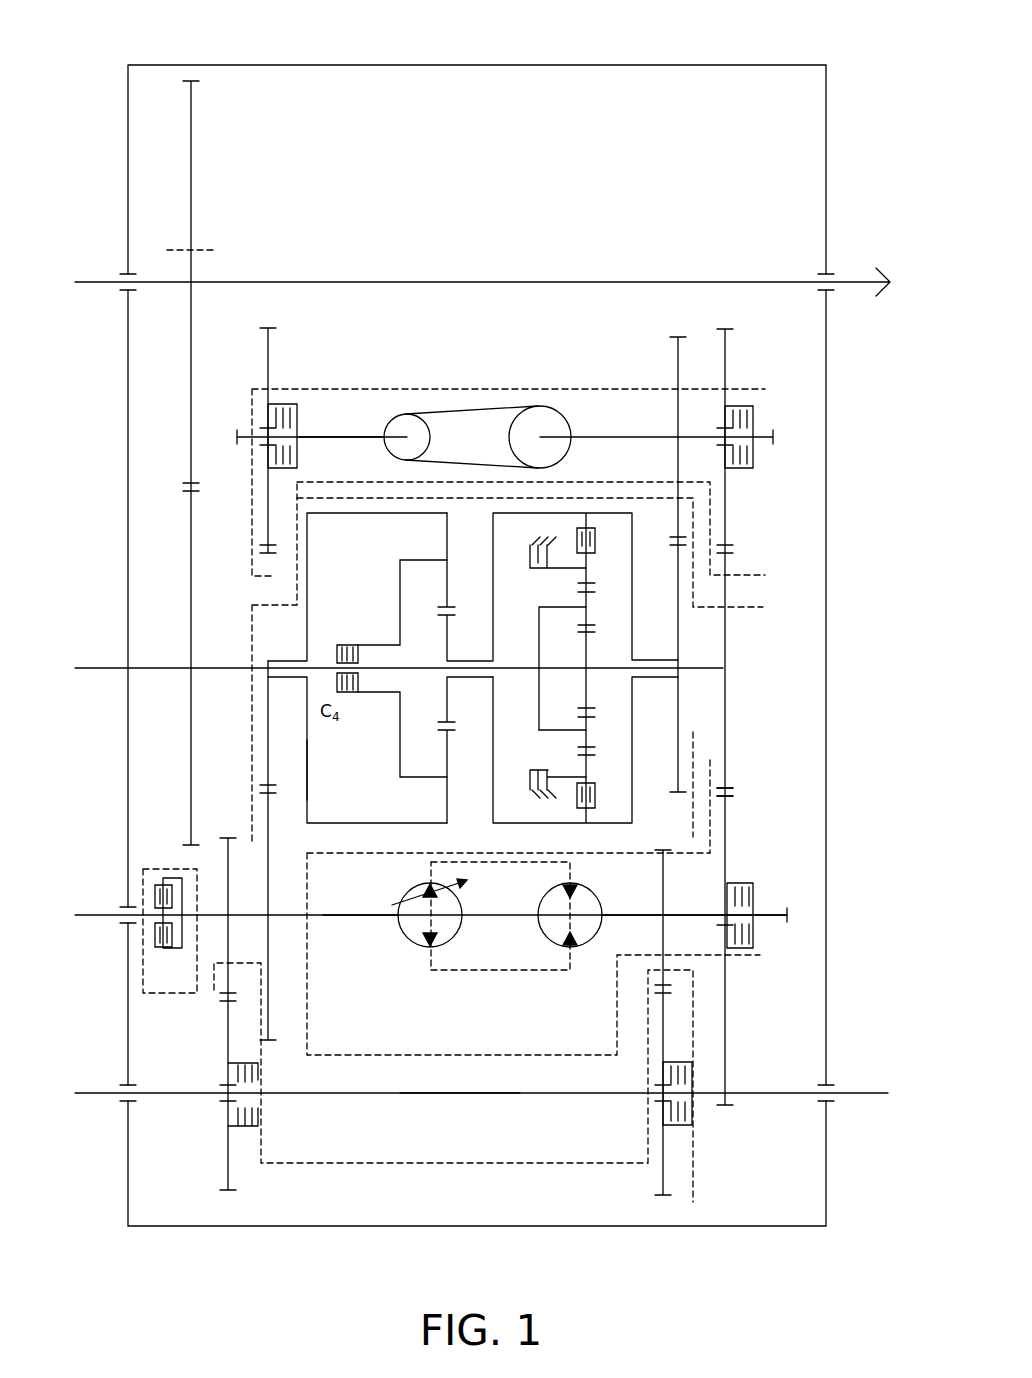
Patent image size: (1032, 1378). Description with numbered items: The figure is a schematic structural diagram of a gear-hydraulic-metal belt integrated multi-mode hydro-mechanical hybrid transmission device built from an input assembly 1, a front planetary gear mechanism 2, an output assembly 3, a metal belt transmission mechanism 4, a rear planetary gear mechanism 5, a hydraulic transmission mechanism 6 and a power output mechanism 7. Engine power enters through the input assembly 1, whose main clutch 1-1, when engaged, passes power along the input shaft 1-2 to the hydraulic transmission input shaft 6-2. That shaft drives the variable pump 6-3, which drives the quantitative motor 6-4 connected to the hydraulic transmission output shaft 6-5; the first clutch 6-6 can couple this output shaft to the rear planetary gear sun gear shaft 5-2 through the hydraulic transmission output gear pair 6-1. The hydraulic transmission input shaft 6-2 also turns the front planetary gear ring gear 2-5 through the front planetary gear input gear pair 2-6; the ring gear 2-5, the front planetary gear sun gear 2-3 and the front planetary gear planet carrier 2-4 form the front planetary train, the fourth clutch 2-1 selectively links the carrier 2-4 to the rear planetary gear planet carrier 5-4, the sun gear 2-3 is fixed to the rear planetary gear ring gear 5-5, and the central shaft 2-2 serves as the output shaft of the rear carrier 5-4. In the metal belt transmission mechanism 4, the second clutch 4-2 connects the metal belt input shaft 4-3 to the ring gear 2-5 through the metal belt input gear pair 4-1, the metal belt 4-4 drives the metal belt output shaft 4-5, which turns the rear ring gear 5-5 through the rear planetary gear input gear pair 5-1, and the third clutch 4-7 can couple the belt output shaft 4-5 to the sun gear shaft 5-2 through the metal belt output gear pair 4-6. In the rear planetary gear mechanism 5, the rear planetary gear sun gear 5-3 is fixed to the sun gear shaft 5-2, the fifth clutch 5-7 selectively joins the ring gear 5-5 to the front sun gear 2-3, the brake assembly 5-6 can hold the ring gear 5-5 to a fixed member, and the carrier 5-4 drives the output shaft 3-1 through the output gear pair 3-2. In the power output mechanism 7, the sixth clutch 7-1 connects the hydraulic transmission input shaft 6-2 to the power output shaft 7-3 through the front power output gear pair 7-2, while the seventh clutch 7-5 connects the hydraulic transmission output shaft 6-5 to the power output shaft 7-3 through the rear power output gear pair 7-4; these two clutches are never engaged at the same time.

The input assembly 1 is at (155, 897).
The main clutch C0 1-1 is at (157, 907).
The input shaft 1-2 is at (159, 915).
The front planetary gear mechanism 2 is at (250, 605).
The fourth clutch C4 2-1 is at (337, 658).
The central shaft 2-2 is at (306, 668).
The front planetary gear sun gear 2-3 is at (444, 718).
The front planetary gear planet carrier 2-4 is at (401, 762).
The front planetary gear ring gear 2-5 is at (307, 770).
The front planetary gear input gear pair 2-6 is at (260, 785).
The output assembly 3 is at (167, 250).
The output shaft 3-1 is at (198, 278).
The output gear pair 3-2 is at (199, 485).
The metal belt transmission mechanism 4 is at (252, 389).
The metal belt input gear pair 4-1 is at (262, 545).
The second clutch C2 4-2 is at (296, 468).
The metal belt input shaft 4-3 is at (338, 437).
The metal belt 4-4 is at (463, 410).
The metal belt output shaft 4-5 is at (585, 435).
The metal belt output gear pair 4-6 is at (725, 490).
The third clutch C3 4-7 is at (753, 405).
The rear planetary gear mechanism 5 is at (695, 513).
The rear planetary gear input gear pair 5-1 is at (695, 541).
The rear planetary gear sun gear shaft 5-2 is at (593, 667).
The rear planetary gear sun gear 5-3 is at (587, 682).
The rear planetary gear planet carrier 5-4 is at (570, 730).
The rear planetary gear ring gear 5-5 is at (587, 762).
The brake assembly 5-6 is at (548, 777).
The fifth clutch C5 5-7 is at (596, 790).
The hydraulic transmission mechanism 6 is at (720, 762).
The hydraulic transmission output gear pair 6-1 is at (735, 787).
The hydraulic transmission input shaft 6-2 is at (323, 915).
The variable pump 6-3 is at (462, 902).
The quantitative motor 6-4 is at (605, 900).
The hydraulic transmission output shaft 6-5 is at (710, 915).
The first clutch C1 6-6 is at (755, 947).
The power output mechanism 7 is at (215, 1165).
The sixth clutch C6 7-1 is at (238, 1065).
The front power output gear pair 7-2 is at (236, 1003).
The power output shaft 7-3 is at (463, 1093).
The rear power output gear pair 7-4 is at (657, 993).
The seventh clutch C7 7-5 is at (670, 1125).